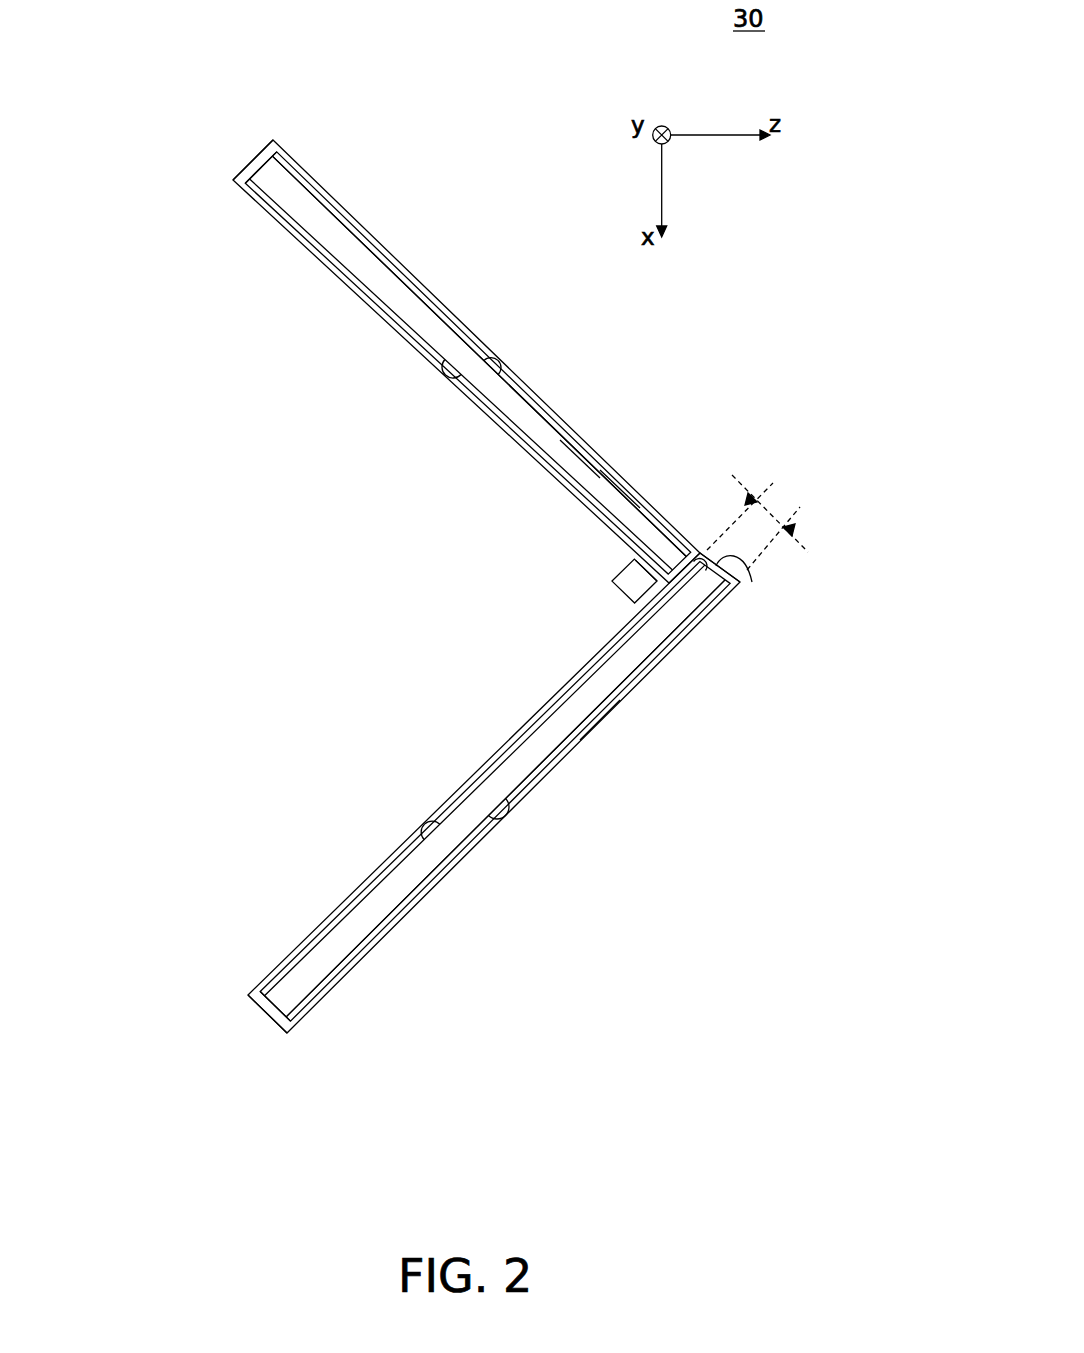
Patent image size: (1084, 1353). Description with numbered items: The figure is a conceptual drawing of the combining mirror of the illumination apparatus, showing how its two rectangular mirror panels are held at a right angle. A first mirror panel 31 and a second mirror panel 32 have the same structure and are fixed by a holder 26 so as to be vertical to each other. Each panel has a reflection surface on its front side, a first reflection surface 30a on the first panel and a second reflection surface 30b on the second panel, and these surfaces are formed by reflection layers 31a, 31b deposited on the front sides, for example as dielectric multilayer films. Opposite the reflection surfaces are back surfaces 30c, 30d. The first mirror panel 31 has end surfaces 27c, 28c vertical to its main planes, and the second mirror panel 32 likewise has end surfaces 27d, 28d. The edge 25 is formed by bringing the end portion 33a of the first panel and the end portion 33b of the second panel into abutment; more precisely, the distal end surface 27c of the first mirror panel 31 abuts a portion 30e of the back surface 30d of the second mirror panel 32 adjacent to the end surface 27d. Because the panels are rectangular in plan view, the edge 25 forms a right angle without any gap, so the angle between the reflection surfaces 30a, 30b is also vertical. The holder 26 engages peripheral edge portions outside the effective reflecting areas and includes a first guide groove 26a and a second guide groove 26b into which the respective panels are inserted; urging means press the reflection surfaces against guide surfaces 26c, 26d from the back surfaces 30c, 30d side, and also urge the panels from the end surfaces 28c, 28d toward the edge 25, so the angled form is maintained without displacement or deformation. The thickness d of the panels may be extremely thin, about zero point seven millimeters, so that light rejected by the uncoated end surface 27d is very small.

The edge 25 is at (724, 625).
The holder 26 is at (362, 225).
The first guide groove 26a is at (455, 378).
The second guide groove 26b is at (433, 822).
The guide surface 26c is at (494, 360).
The guide surface 26d is at (500, 810).
The end surface 27c is at (700, 552).
The end surface 27d is at (752, 582).
The end surface 28c is at (252, 160).
The end surface 28d is at (268, 1012).
The first reflection surface 30a is at (612, 440).
The second reflection surface 30b is at (605, 718).
The back surface 30c is at (383, 318).
The back surface 30d is at (352, 890).
The portion 30e is at (627, 563).
The first mirror panel 31 is at (426, 302).
The reflection layer 31a is at (569, 432).
The reflection layer 31b is at (553, 770).
The second mirror panel 32 is at (430, 862).
The end portion 33a is at (676, 603).
The end portion 33b is at (652, 543).
The thickness d is at (767, 510).